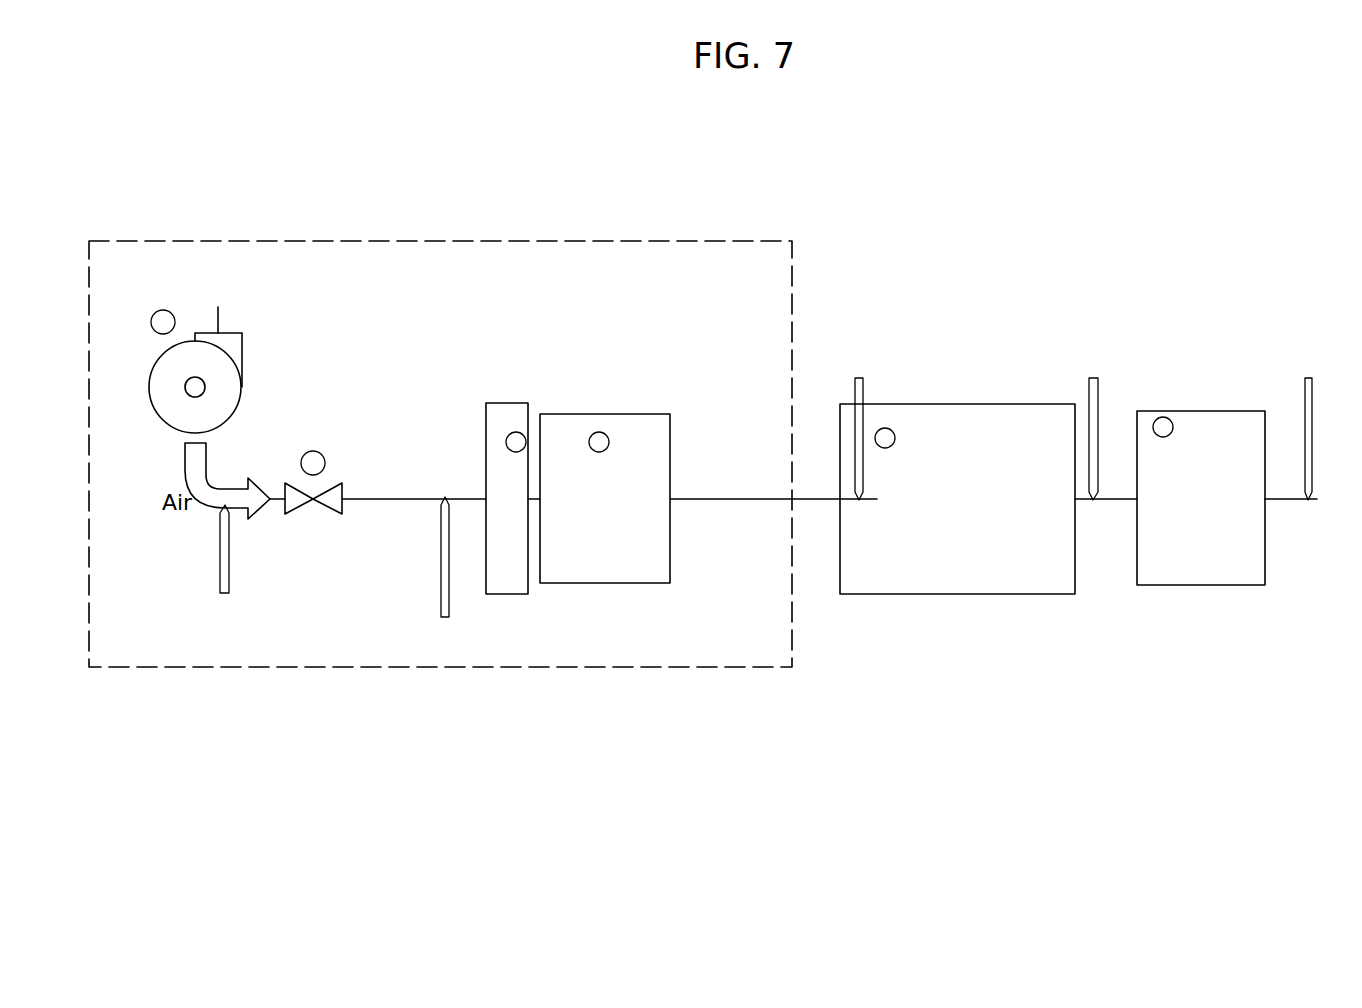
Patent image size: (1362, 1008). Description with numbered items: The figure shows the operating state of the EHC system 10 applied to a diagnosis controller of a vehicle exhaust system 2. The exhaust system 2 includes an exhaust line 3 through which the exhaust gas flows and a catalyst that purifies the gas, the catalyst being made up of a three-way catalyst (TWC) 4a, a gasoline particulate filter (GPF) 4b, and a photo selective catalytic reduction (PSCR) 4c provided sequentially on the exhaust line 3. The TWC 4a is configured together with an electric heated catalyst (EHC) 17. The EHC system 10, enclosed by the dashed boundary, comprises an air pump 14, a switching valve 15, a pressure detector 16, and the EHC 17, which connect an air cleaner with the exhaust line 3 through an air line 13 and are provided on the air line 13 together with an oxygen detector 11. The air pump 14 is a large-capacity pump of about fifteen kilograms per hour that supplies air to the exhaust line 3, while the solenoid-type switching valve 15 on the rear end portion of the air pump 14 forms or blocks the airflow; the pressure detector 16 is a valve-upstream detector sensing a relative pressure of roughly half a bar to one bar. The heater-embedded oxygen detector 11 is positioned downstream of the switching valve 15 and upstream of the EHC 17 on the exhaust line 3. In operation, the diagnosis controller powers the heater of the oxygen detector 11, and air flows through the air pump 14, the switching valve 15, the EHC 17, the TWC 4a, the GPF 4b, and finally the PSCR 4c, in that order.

The exhaust system 2 is at (1141, 292).
The exhaust line 3 is at (468, 497).
The EHC system 10 is at (412, 241).
The oxygen detector 11 is at (447, 601).
The air line 13 is at (413, 500).
The air pump 14 is at (242, 353).
The switching valve 15 is at (342, 505).
The pressure detector 16 is at (222, 560).
The electric heated catalyst (EHC) 17 is at (510, 402).
The three-way catalyst (TWC) 4a is at (670, 568).
The gasoline particulate filter (GPF) 4b is at (1020, 570).
The photo selective catalytic reduction (PSCR) 4c is at (1238, 570).